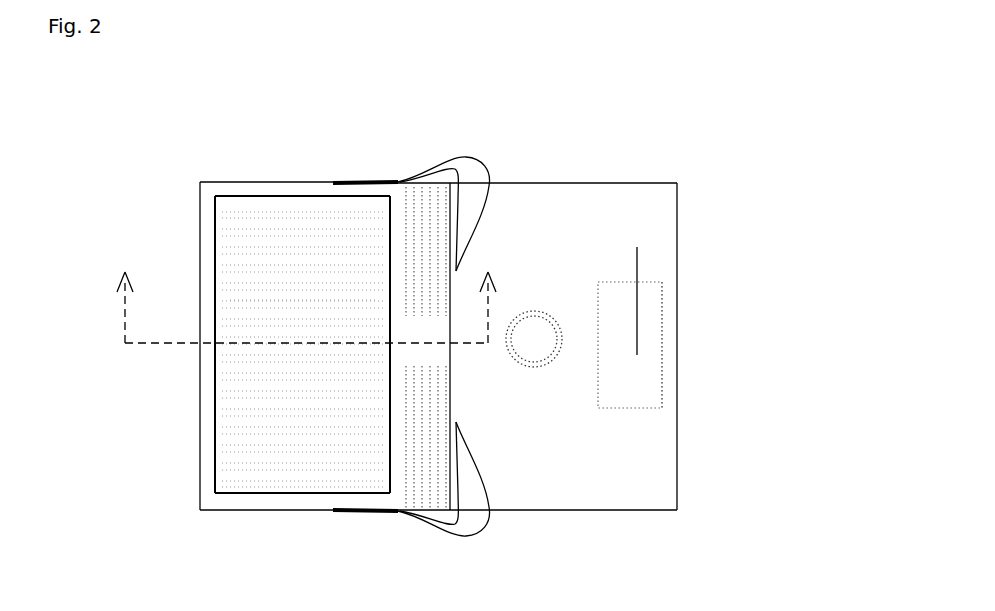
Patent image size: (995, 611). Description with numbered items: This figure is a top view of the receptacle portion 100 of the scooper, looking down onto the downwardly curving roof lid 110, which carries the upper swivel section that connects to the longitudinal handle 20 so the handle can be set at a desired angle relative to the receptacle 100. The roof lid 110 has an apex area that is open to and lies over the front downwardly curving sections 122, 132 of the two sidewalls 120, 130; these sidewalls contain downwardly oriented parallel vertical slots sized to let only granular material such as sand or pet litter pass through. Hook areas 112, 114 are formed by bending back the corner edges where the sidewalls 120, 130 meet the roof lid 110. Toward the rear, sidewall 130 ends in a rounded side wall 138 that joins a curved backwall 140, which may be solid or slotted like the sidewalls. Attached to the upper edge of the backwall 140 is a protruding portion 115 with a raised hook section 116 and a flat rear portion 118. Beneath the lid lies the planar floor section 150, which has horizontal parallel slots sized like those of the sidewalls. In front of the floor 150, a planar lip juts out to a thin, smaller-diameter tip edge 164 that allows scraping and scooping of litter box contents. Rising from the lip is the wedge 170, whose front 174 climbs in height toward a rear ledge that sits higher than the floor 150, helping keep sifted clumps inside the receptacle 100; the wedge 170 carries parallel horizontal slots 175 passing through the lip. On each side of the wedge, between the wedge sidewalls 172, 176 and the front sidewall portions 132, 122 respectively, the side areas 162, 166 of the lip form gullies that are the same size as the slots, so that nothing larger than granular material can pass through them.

The receptacle portion 100 is at (604, 93).
The roof lid 110 is at (592, 197).
The sidewall 130 is at (642, 183).
The rounded side wall 138 is at (677, 183).
The backwall 140 is at (678, 463).
The sidewall 120 is at (608, 513).
The hook area 114 is at (472, 173).
The front downwardly curving section 132 is at (363, 182).
The hook area 112 is at (472, 520).
The raised hook section 116 is at (637, 284).
The protruding portion 115 is at (648, 325).
The flat rear portion 118 is at (660, 378).
The longitudinal handle 20 is at (537, 348).
The floor section 150 is at (428, 360).
The wedge 170 is at (255, 243).
The wedge sidewall 172 is at (235, 203).
The front of the wedge 174 is at (218, 282).
The wedge sidewall 176 is at (262, 482).
The horizontal slots 175 is at (248, 440).
The side area of lip 162 is at (295, 188).
The tip edge 164 is at (200, 456).
The side area of lip 166 is at (258, 500).
The front downwardly curving section 122 is at (320, 511).